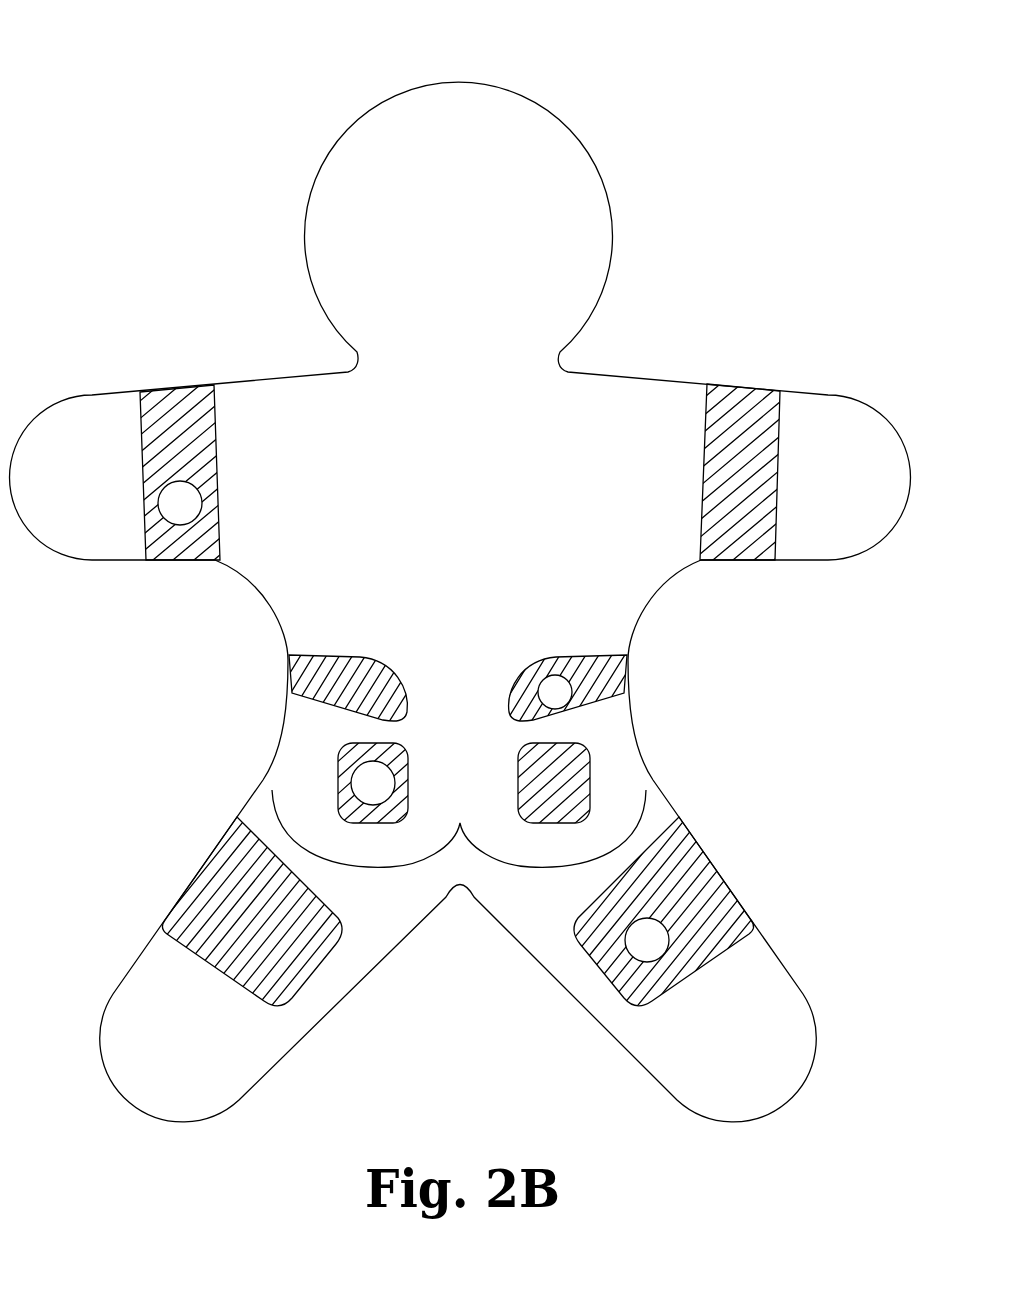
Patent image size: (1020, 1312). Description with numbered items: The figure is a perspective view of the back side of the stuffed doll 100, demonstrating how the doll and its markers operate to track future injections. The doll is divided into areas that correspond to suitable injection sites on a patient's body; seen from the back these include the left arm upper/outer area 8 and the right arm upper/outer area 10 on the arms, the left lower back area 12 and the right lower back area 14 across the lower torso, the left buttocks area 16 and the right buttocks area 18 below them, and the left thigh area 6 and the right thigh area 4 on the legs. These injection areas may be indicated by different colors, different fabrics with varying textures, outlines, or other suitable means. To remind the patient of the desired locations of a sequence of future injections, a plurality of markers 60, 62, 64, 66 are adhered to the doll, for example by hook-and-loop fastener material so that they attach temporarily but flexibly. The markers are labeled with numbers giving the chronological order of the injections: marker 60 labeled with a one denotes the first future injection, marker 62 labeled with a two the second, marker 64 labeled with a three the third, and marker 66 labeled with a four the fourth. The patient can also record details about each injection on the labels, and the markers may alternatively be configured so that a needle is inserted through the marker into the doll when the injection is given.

The stuffed doll 100 is at (312, 70).
The left arm upper/outer area 8 is at (175, 417).
The right arm upper/outer area 10 is at (747, 427).
The left lower back area 12 is at (322, 678).
The right lower back area 14 is at (588, 688).
The left buttocks area 16 is at (340, 748).
The right buttocks area 18 is at (575, 790).
The left thigh area 6 is at (193, 905).
The right thigh area 4 is at (687, 898).
The marker 60 is at (157, 512).
The marker 62 is at (572, 708).
The marker 64 is at (336, 817).
The marker 66 is at (663, 955).